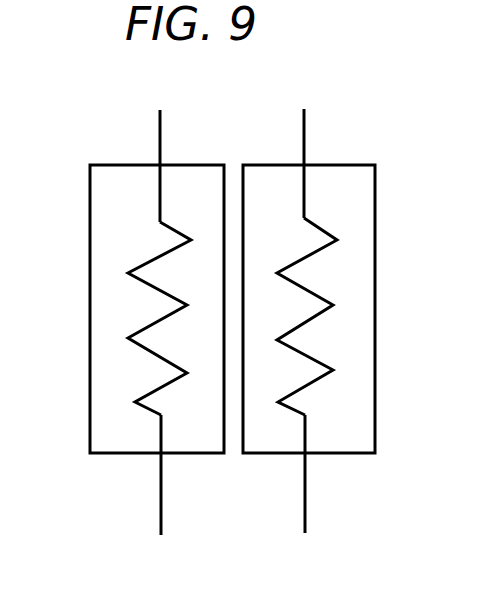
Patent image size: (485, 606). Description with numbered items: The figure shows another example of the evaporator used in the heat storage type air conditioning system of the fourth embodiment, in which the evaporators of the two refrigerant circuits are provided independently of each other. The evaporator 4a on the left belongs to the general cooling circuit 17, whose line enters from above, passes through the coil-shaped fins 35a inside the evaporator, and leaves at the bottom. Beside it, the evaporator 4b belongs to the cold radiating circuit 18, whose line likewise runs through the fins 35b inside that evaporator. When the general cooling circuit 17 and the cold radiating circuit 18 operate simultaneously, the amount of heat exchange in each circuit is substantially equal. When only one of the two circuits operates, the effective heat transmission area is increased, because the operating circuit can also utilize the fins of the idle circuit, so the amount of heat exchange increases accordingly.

The evaporator 4a is at (108, 165).
The evaporator 4b is at (338, 165).
The fins 35a is at (92, 416).
The fins 35b is at (365, 423).
The general cooling circuit 17 is at (161, 497).
The cold radiating circuit 18 is at (305, 503).